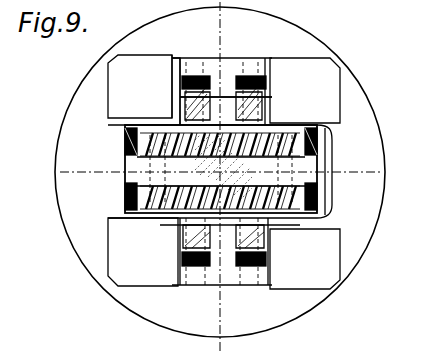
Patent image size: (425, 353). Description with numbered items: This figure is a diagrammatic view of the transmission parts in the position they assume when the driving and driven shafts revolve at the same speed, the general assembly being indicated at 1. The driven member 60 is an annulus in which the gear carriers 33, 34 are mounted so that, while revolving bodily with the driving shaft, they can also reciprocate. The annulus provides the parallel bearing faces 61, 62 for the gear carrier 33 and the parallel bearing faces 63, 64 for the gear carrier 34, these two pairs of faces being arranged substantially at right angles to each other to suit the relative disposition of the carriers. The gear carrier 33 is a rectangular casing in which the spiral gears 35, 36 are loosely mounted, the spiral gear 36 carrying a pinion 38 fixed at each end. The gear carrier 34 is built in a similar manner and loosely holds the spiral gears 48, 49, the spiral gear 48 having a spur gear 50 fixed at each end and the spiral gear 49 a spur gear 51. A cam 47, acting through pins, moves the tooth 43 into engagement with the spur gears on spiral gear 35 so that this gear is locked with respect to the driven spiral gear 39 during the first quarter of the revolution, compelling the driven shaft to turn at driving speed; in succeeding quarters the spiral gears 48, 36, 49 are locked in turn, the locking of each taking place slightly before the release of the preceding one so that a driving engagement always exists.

The drive unit 1 is at (92, 50).
The gear carrier 33 is at (325, 183).
The gear carrier 34 is at (230, 68).
The spiral gear 35 is at (255, 133).
The spiral gear 36 is at (275, 215).
The pinion 38 is at (125, 200).
The driven spiral gear 39 is at (220, 171).
The tooth 43 is at (128, 148).
The cam 47 is at (123, 134).
The spiral gear 48 is at (180, 99).
The spiral gear 49 is at (272, 97).
The spur gear 50 is at (196, 72).
The spur gear 51 is at (262, 72).
The driven member 60 is at (355, 232).
The bearing face 61 is at (118, 77).
The bearing face 62 is at (332, 266).
The bearing face 63 is at (196, 66).
The bearing face 64 is at (133, 283).